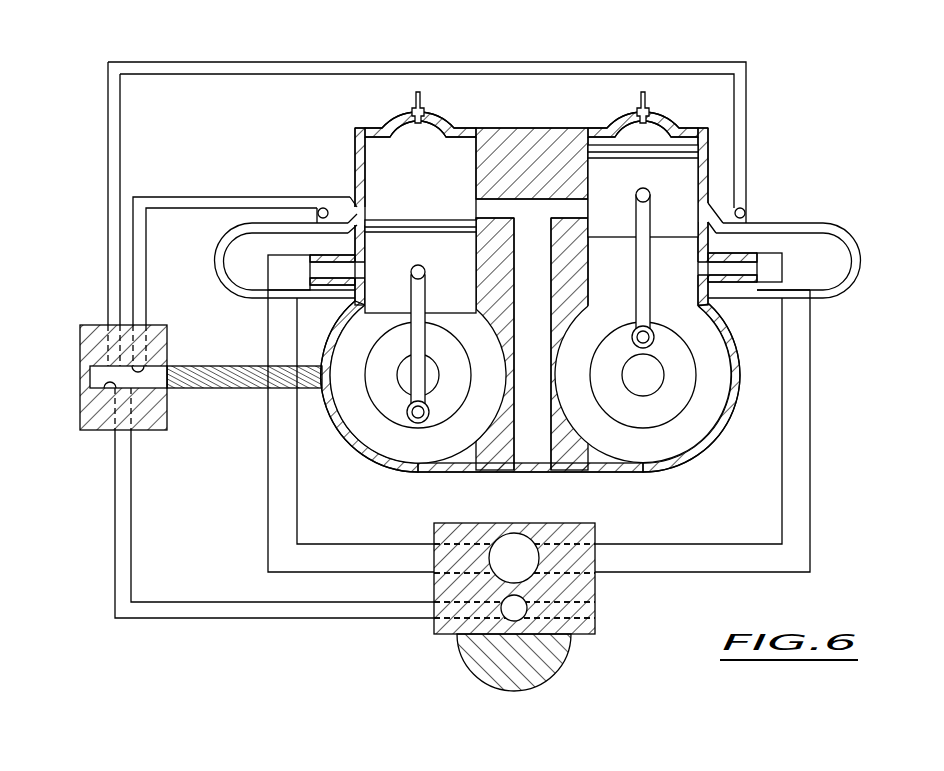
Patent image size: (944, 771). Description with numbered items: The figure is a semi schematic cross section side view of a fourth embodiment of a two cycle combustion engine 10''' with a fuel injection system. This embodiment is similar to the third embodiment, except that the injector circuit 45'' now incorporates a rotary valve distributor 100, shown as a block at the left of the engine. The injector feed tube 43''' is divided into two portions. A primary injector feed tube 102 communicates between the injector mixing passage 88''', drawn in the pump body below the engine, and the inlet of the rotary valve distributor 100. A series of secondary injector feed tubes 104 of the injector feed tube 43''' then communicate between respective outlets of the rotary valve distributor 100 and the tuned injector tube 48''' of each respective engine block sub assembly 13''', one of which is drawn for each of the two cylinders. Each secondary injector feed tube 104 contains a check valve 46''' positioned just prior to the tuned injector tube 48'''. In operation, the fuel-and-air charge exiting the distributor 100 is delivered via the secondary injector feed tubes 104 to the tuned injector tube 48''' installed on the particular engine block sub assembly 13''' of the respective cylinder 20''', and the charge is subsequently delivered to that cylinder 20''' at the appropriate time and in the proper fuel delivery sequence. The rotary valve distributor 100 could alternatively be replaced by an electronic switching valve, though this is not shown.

The combustion engine 10''' is at (552, 246).
The cylinder 20''' is at (531, 145).
The engine block sub assembly 13''' is at (530, 327).
The tuned injector tube 48''' is at (509, 244).
The check valve 46''' is at (554, 186).
The injector circuit 45'' is at (399, 213).
The secondary injector feed tubes 104 is at (120, 170).
The rotary valve distributor 100 is at (88, 430).
The injector feed tube 43''' is at (363, 495).
The primary injector feed tube 102 is at (253, 619).
The injector mixing passage 88''' is at (549, 607).